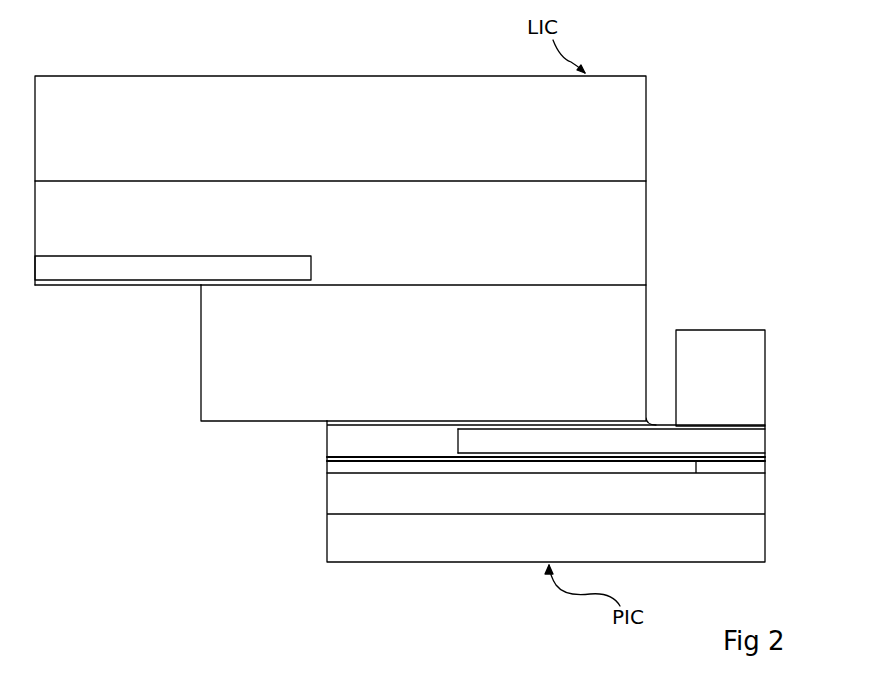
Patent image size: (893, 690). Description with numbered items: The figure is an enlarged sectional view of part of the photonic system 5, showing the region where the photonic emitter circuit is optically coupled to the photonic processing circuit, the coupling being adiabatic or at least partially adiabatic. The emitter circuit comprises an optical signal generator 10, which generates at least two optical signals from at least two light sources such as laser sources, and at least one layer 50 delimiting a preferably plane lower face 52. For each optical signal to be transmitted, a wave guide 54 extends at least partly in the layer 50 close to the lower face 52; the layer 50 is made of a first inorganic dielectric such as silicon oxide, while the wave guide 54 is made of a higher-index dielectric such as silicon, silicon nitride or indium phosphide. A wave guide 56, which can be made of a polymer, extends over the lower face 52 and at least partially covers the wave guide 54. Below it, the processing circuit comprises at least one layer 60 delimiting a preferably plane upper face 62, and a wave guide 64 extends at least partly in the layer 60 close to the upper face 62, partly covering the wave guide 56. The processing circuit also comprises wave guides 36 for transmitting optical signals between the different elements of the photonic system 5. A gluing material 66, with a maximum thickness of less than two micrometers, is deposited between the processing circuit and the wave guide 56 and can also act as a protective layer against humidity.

The photonic system 5 is at (727, 135).
The optical signal generator 10 is at (358, 143).
The layer 50 is at (358, 230).
The lower face 52 is at (80, 286).
The wave guide 54 is at (148, 270).
The wave guide 56 is at (231, 420).
The gluing material 66 is at (578, 422).
The layer 60 is at (415, 443).
The upper face 62 is at (367, 425).
The wave guide 64 is at (747, 442).
The wave guide 36 is at (727, 470).